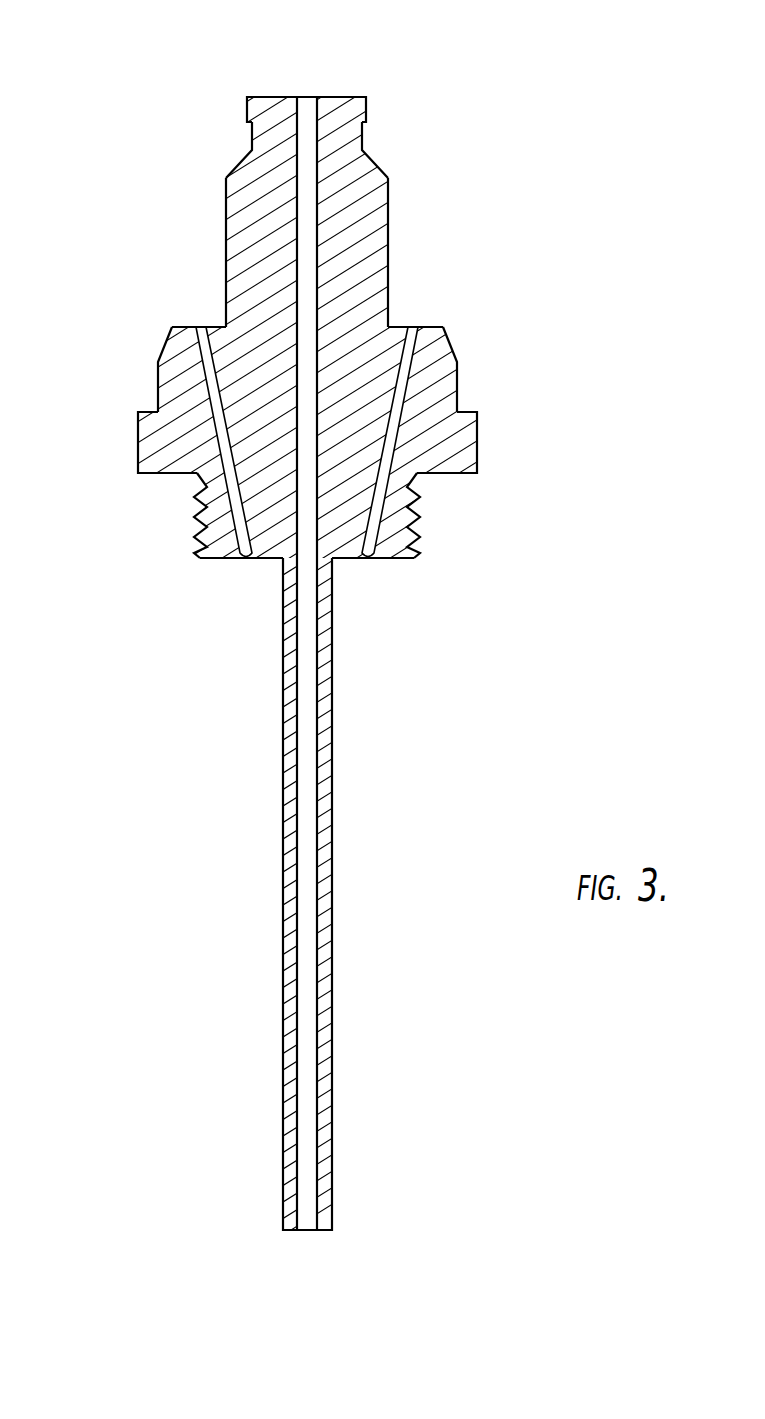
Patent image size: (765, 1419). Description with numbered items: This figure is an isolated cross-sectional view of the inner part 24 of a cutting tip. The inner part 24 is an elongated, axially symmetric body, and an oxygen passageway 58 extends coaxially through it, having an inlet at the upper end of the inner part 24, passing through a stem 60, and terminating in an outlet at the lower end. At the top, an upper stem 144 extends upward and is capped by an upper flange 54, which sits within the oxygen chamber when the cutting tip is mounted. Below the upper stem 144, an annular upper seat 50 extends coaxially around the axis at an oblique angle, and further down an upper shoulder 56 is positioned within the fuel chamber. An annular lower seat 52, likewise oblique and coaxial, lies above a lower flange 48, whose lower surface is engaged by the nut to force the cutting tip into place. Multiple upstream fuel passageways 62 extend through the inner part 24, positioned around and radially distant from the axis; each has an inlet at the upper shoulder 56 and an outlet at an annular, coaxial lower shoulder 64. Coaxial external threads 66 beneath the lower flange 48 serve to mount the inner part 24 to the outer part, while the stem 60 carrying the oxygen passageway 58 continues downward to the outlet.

The inner part 24 is at (151, 73).
The lower flange 48 is at (137, 444).
The upper seat 50 is at (380, 165).
The lower seat 52 is at (160, 353).
The upper flange 54 is at (367, 108).
The upper shoulder 56 is at (215, 327).
The oxygen passageway 58 is at (310, 1230).
The stem 60 is at (334, 750).
The upstream fuel passageway 62 is at (200, 327).
The lower shoulder 64 is at (225, 560).
The external threads 66 is at (412, 522).
The upper stem 144 is at (388, 250).